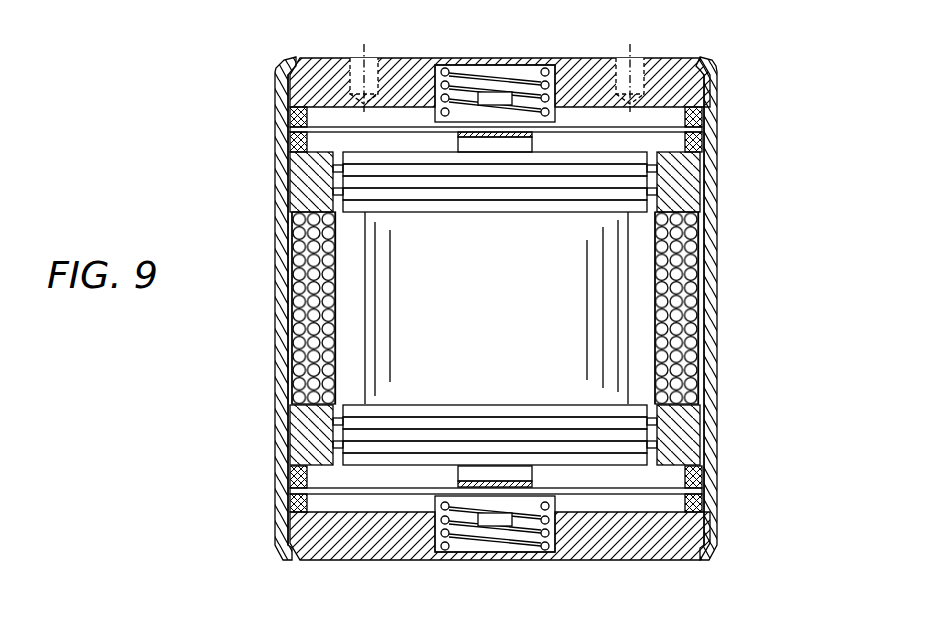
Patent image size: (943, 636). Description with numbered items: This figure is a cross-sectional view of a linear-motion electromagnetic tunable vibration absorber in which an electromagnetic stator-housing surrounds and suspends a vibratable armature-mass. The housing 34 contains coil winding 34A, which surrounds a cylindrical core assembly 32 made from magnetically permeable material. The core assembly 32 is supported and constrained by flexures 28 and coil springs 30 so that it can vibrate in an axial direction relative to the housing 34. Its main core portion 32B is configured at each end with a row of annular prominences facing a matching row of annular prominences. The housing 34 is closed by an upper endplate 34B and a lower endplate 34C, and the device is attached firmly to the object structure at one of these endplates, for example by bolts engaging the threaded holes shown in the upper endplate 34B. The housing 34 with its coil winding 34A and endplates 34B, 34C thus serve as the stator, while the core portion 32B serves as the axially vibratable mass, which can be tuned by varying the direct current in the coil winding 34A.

The flexure 28 is at (658, 125).
The coil spring 30 is at (522, 77).
The core assembly 32 is at (743, 148).
The main core portion 32B is at (496, 308).
The housing 34 is at (712, 402).
The coil winding 34A is at (707, 260).
The upper endplate 34B is at (322, 62).
The lower endplate 34C is at (332, 540).